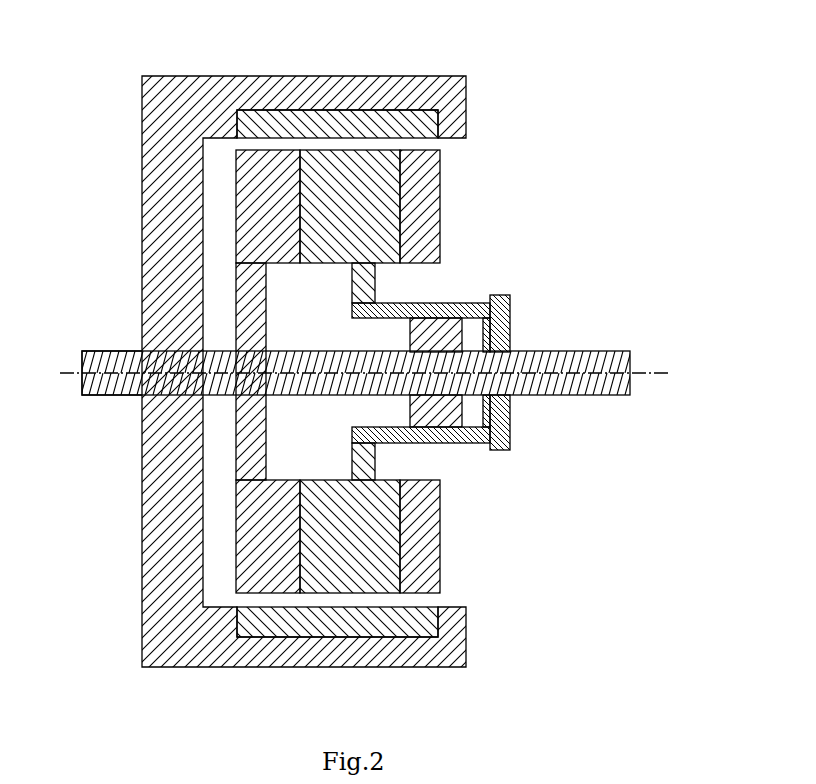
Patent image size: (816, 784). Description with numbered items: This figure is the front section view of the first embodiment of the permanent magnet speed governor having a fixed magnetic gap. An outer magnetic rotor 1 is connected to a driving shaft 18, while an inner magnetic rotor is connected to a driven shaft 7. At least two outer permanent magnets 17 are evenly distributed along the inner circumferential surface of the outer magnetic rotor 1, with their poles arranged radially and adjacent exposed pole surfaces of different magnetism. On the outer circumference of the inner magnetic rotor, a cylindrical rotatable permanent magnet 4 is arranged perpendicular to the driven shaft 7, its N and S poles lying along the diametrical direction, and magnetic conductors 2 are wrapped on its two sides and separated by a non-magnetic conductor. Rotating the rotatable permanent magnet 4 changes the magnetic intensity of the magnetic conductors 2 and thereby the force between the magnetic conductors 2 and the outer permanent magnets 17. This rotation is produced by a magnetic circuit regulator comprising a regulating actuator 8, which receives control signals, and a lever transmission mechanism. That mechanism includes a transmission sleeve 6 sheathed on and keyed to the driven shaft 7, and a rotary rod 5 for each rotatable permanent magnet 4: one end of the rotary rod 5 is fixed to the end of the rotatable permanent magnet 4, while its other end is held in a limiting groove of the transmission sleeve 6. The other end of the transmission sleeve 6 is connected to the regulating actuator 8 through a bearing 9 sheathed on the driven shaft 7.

The outer magnetic rotor 1 is at (145, 290).
The magnetic conductor 2 is at (415, 185).
The rotatable permanent magnet 4 is at (332, 555).
The rotary rod 5 is at (371, 455).
The transmission sleeve 6 is at (458, 302).
The driven shaft 7 is at (573, 352).
The regulating actuator 8 is at (506, 427).
The bearing 9 is at (491, 297).
The outer permanent magnet 17 is at (410, 120).
The driving shaft 18 is at (93, 350).